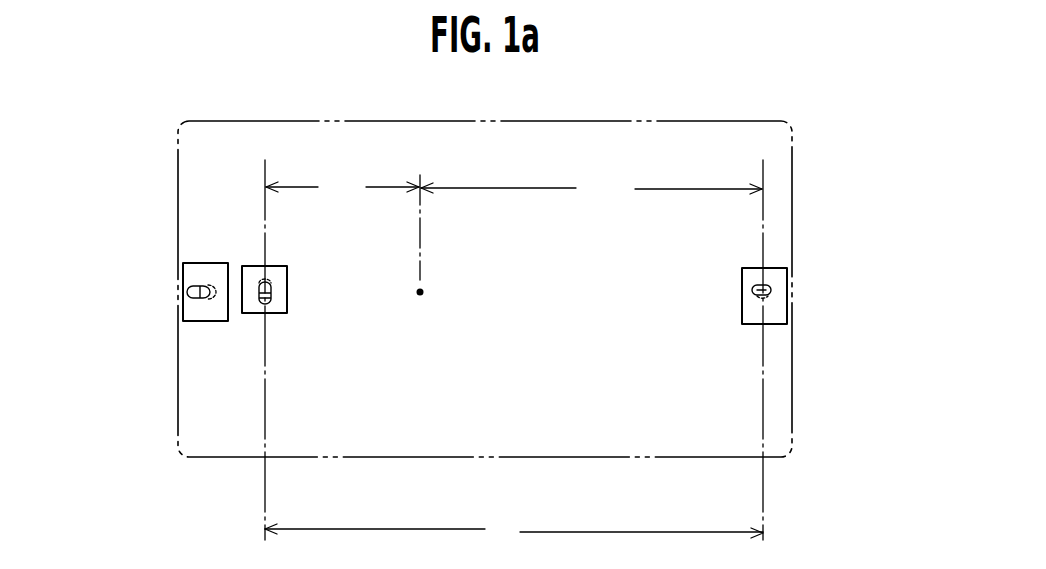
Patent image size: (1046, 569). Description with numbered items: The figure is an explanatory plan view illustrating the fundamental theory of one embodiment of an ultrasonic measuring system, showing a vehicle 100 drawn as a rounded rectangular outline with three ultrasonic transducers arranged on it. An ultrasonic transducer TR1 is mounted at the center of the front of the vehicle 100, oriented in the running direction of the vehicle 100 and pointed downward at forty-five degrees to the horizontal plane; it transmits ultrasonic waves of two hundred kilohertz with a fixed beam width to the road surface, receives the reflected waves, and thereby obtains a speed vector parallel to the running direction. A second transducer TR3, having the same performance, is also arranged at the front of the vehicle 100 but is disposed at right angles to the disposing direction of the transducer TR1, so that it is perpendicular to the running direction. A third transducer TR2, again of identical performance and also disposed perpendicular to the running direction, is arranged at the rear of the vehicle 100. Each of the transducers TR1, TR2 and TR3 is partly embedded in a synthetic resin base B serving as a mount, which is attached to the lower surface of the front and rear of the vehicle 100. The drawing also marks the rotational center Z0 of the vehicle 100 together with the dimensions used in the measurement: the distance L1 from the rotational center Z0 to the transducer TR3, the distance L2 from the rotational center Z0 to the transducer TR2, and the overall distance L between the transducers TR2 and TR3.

The vehicle 100 is at (180, 122).
The synthetic resin base B is at (245, 266).
The ultrasonic transducer TR1 is at (183, 299).
The ultrasonic transducer TR2 is at (770, 290).
The ultrasonic transducer TR3 is at (283, 313).
The rotational center Z0 is at (446, 243).
The distance L1 is at (342, 187).
The distance L2 is at (591, 195).
The distance L is at (514, 514).